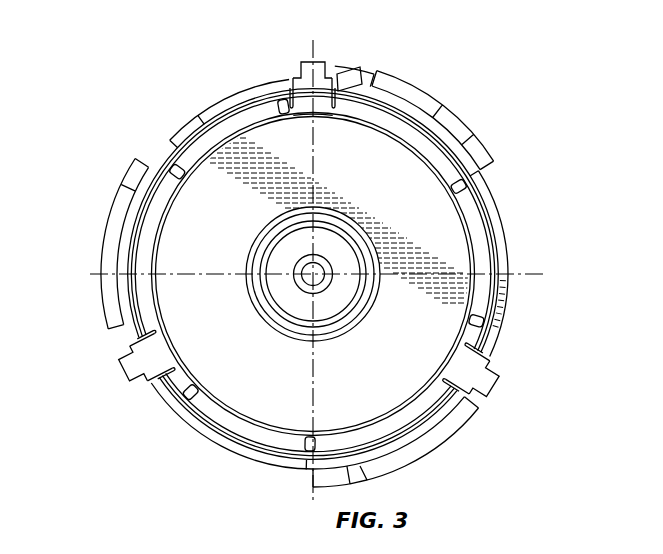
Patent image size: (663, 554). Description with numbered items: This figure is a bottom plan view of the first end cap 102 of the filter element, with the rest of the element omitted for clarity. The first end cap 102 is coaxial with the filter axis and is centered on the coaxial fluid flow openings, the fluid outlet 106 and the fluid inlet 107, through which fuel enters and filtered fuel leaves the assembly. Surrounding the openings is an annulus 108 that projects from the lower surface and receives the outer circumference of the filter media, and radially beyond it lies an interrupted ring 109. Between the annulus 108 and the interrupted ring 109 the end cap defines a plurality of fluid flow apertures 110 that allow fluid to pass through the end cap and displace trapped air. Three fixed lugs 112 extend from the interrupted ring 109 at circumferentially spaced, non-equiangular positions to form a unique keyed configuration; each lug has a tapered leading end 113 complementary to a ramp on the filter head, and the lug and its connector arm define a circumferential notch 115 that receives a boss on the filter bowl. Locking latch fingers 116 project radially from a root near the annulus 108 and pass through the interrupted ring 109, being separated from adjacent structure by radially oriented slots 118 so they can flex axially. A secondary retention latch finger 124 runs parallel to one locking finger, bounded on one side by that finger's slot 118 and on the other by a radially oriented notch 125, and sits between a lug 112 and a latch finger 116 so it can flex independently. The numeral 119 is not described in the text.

The first end cap 102 is at (187, 122).
The fluid outlet 106 is at (342, 293).
The fluid inlet 107 is at (318, 268).
The annulus 108 is at (177, 168).
The interrupted ring 109 is at (262, 89).
The fluid flow apertures 110 is at (232, 124).
The fixed lugs 112 is at (404, 73).
The leading end 113 is at (446, 440).
The circumferential notch 115 is at (157, 347).
The locking latch fingers 116 is at (300, 60).
The radially oriented slots 118 is at (332, 86).
The tab base 119 is at (320, 103).
The secondary retention latch finger 124 is at (401, 72).
The radially oriented notch 125 is at (372, 100).